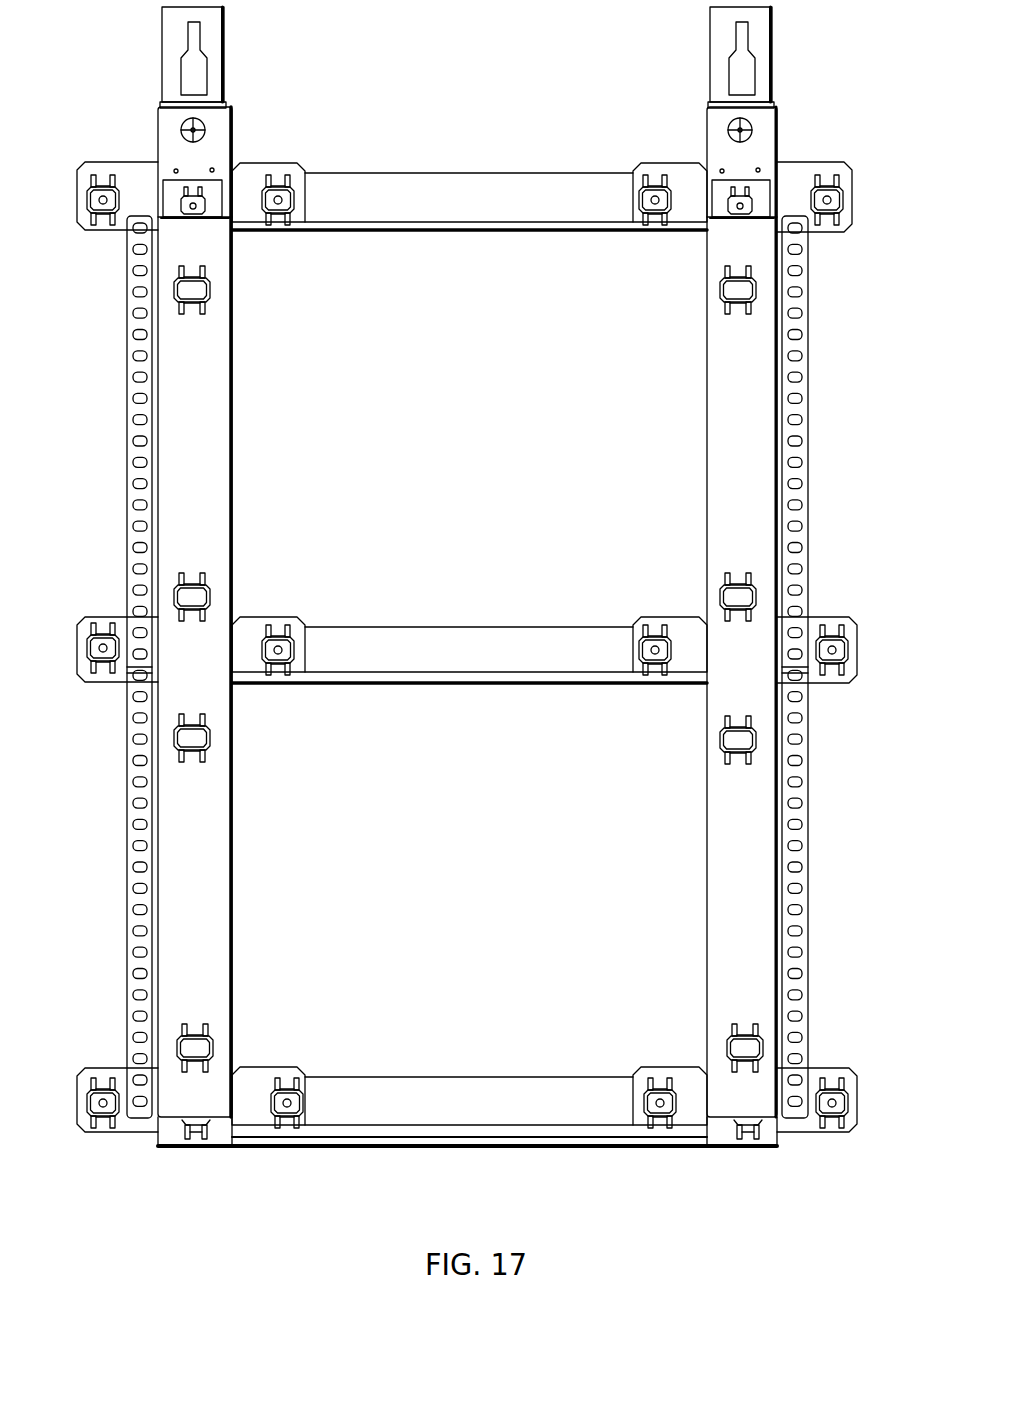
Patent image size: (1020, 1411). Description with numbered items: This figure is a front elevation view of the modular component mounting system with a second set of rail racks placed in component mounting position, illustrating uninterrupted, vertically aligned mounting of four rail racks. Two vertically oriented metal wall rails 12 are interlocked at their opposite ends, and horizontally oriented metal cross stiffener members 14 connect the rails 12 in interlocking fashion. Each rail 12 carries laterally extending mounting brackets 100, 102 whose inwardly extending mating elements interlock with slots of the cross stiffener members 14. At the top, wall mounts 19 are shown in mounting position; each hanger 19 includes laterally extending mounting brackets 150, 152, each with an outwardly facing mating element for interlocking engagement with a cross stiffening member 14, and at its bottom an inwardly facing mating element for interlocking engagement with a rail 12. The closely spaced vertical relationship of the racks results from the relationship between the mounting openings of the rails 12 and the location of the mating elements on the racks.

The wall rail 12 is at (212, 1132).
The cross stiffener member 14 is at (482, 172).
The wall mount 19 is at (224, 56).
The mounting bracket 100 is at (110, 617).
The mounting bracket 102 is at (822, 617).
The mounting bracket 150 is at (130, 160).
The mounting bracket 152 is at (792, 160).